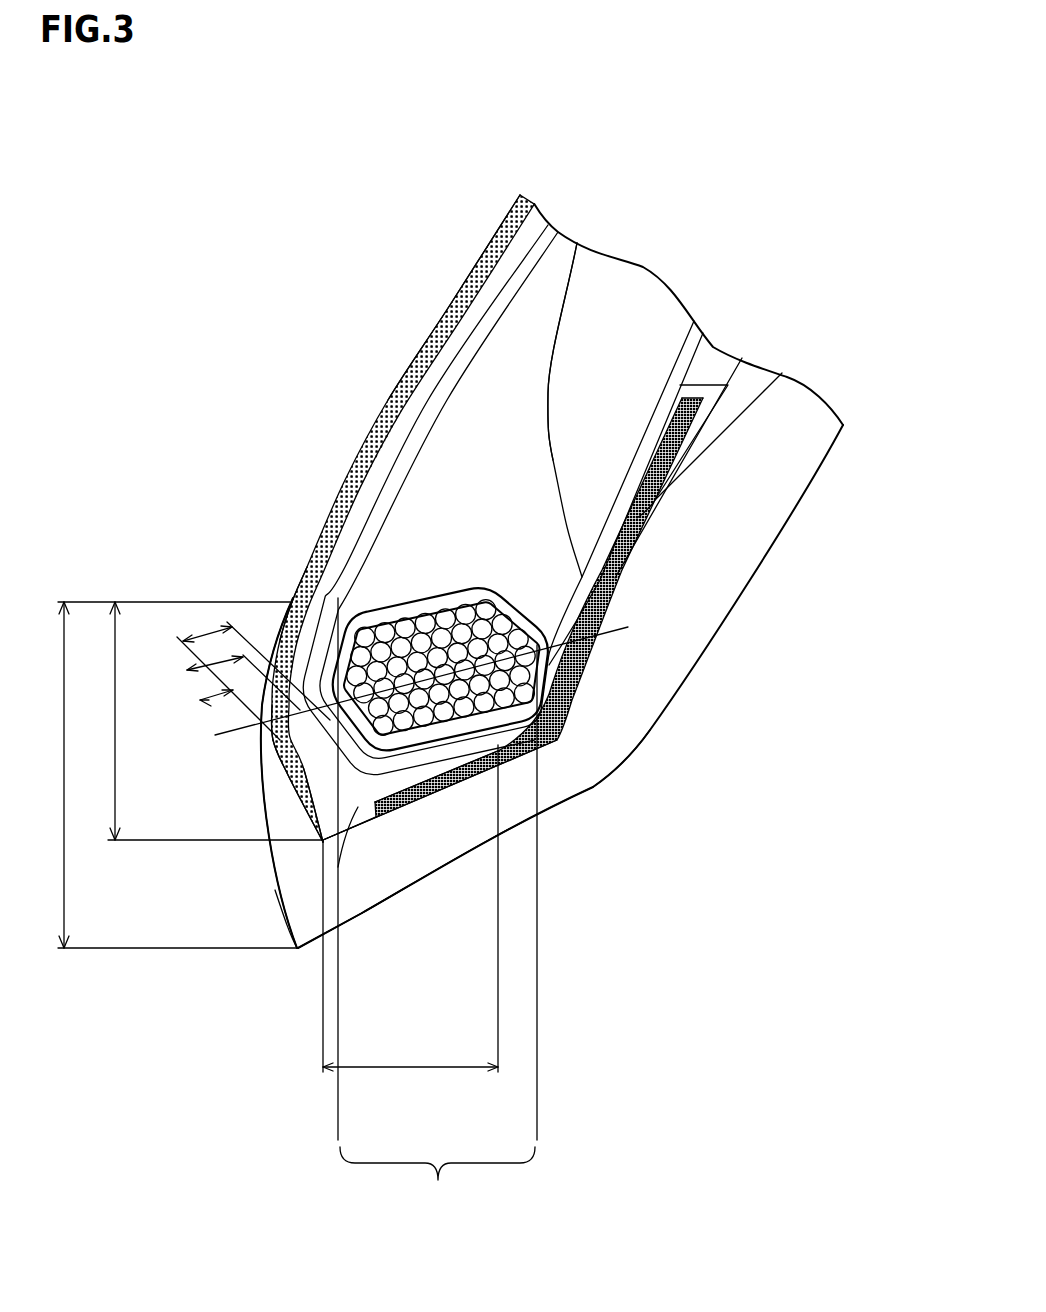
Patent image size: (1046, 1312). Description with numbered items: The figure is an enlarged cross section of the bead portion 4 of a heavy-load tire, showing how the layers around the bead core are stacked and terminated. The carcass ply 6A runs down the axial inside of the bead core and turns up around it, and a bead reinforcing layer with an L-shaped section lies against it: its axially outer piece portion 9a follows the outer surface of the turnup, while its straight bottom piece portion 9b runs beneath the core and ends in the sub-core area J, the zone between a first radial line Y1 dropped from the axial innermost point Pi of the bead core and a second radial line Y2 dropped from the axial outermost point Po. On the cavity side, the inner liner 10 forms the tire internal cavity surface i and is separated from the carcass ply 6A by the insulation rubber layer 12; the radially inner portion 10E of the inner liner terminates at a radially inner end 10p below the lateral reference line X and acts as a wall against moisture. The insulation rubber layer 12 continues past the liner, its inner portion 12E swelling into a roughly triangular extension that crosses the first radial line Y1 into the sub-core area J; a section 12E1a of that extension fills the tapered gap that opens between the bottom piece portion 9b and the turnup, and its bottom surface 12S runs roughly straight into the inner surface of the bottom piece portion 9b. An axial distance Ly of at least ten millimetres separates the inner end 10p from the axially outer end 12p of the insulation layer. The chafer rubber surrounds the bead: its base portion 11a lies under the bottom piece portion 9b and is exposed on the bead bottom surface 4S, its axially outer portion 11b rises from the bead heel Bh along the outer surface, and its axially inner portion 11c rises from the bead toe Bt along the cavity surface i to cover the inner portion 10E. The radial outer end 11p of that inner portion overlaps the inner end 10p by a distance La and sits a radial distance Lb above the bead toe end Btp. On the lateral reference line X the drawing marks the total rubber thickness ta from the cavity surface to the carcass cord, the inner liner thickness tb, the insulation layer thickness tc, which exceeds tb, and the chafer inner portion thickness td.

The insulation rubber layer 12 is at (487, 293).
The tire internal cavity surface i is at (444, 313).
The carcass ply 6A is at (435, 418).
The inner liner 10 is at (362, 457).
The axial innermost point of the bead core Pi is at (308, 588).
The radial outer end of the axially inner portion 11p is at (285, 593).
The axially outer portion 11b is at (742, 512).
The axial outermost point of the bead core Po is at (605, 600).
The lateral reference line X is at (613, 635).
The axially outer piece portion 9a is at (590, 667).
The rubber thickness ta is at (253, 673).
The inner liner thickness tb is at (228, 653).
The thickness of the axially inner portion td is at (227, 687).
The thickness of the insulation rubber layer tc is at (273, 747).
The radially overlapped distance La is at (210, 721).
The radial distance Lb is at (174, 775).
The axially inner portion 11c is at (273, 775).
The radially inner portion of the inner liner 10E is at (293, 787).
The radially inner end of the inner liner 10p is at (303, 853).
The inner portion of the insulation rubber layer 12E is at (305, 900).
The bead toe end Btp is at (293, 957).
The bead toe Bt is at (267, 993).
The bottom surface of the extension portion 12S is at (372, 823).
The bottom piece portion 9b is at (443, 783).
The portion of the extension portion 12E1a is at (410, 777).
The base portion 11a is at (549, 787).
The axially outer end of the insulation rubber layer 12p is at (572, 722).
The bead portion 4 is at (700, 745).
The bead heel Bh is at (603, 795).
The bead bottom surface 4S is at (567, 802).
The axial distance Ly is at (410, 1070).
The first radial line Y1 is at (338, 1097).
The sub-core area J is at (437, 1181).
The second radial line Y2 is at (537, 1097).